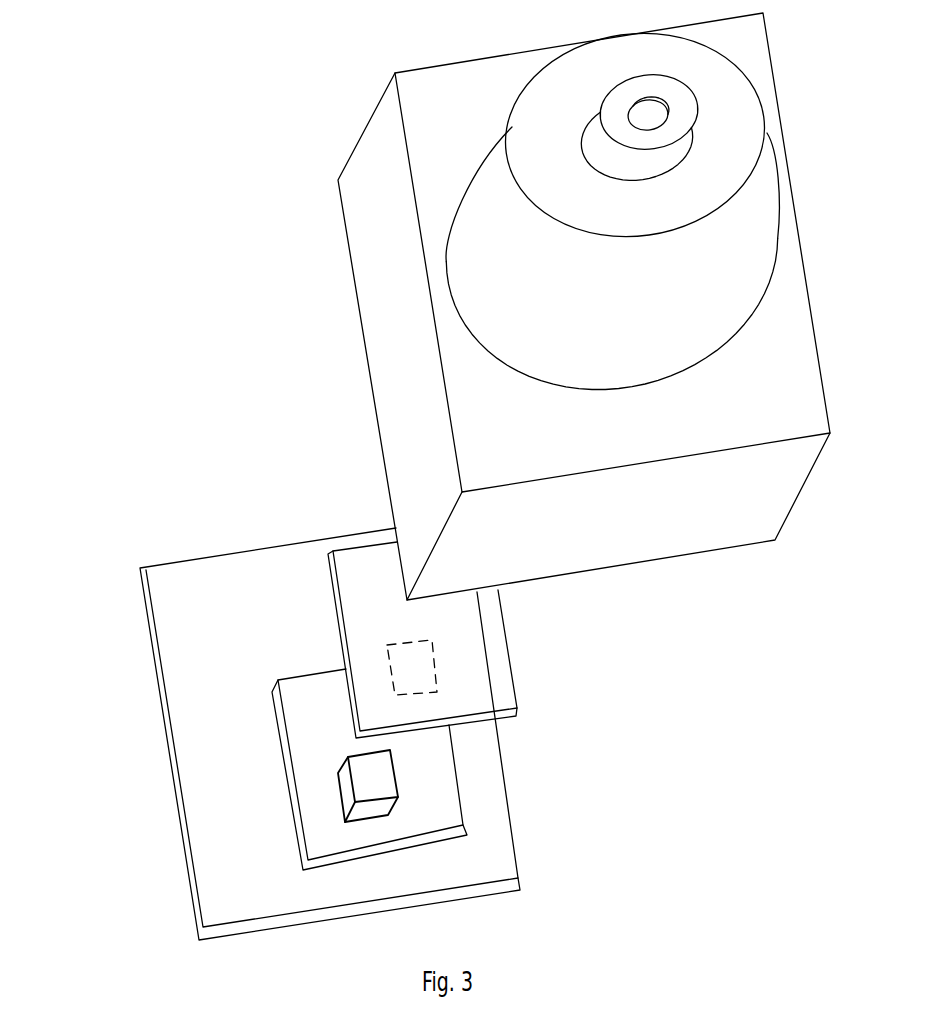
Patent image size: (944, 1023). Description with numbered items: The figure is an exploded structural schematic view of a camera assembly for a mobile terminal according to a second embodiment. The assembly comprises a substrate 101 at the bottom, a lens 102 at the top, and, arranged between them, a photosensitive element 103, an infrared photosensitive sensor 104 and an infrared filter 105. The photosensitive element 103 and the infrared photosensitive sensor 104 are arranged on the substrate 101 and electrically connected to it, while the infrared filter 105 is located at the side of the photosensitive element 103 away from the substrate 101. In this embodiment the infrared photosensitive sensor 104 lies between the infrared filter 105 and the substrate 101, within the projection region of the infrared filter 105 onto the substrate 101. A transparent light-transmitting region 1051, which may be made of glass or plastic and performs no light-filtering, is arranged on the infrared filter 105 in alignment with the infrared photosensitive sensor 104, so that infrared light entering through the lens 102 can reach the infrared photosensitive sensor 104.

The substrate 101 is at (212, 707).
The lens 102 is at (527, 248).
The photosensitive element 103 is at (320, 733).
The infrared photosensitive sensor 104 is at (348, 793).
The infrared filter 105 is at (335, 597).
The light-transmitting region 1051 is at (417, 668).